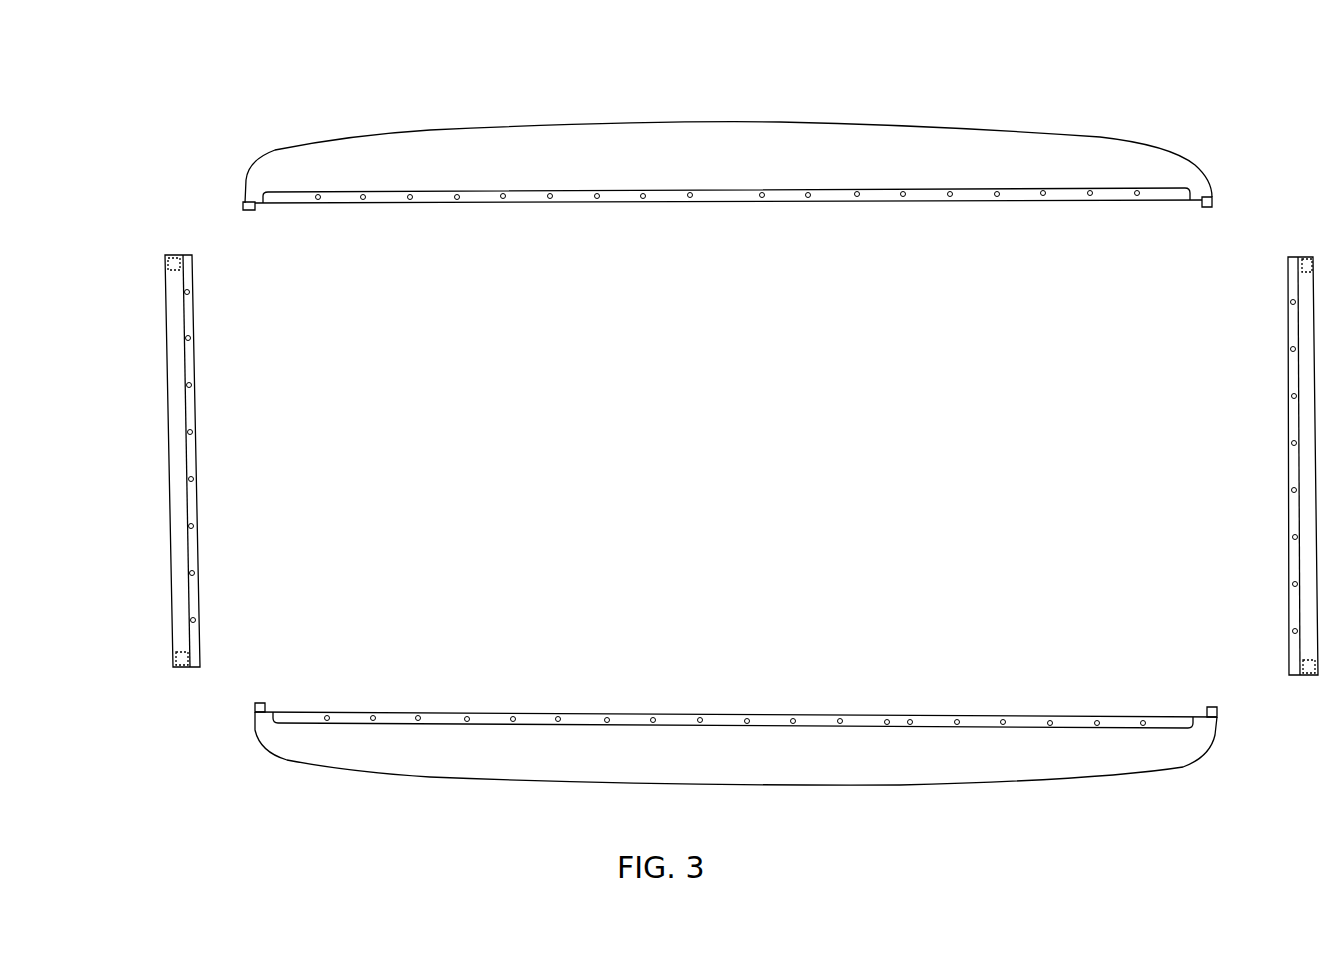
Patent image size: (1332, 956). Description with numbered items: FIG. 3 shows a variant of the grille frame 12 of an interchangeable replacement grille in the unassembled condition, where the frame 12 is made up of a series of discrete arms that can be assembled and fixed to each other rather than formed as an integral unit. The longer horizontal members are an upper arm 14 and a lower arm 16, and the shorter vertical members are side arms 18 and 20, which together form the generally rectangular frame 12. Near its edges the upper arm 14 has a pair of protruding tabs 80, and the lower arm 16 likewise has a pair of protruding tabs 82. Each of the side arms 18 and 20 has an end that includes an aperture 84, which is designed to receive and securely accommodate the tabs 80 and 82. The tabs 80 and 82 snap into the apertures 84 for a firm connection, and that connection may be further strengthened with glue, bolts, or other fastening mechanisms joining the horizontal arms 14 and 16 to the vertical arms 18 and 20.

The grille frame 12 is at (628, 130).
The upper arm 14 is at (423, 147).
The lower arm 16 is at (802, 772).
The side arm 18 is at (177, 323).
The side arm 20 is at (1300, 462).
The protruding tab 80 is at (252, 210).
The protruding tab 82 is at (262, 703).
The aperture 84 is at (175, 268).